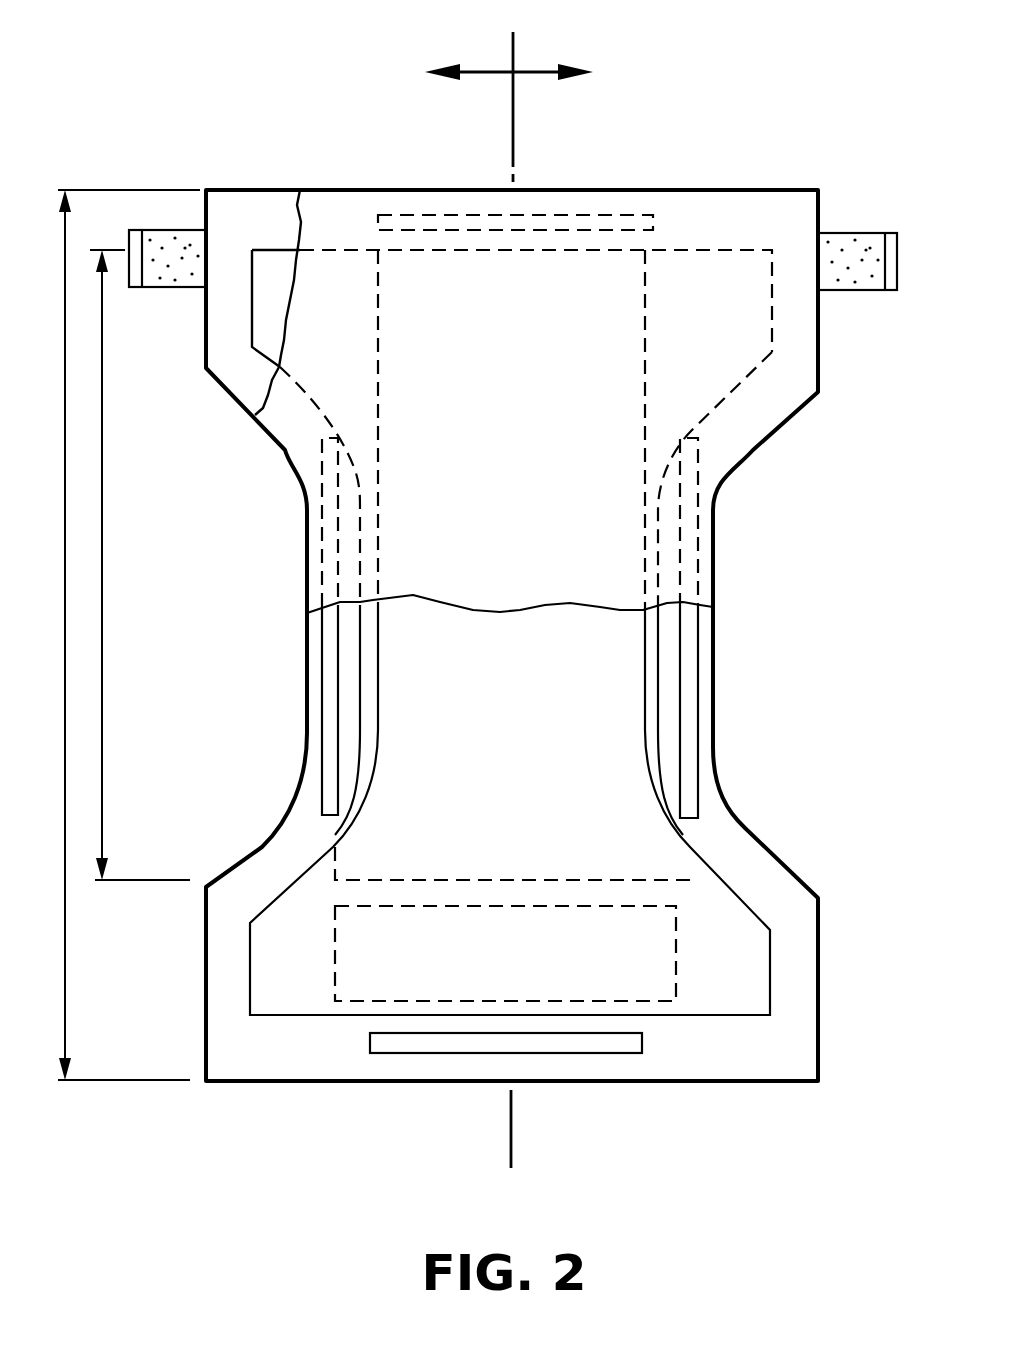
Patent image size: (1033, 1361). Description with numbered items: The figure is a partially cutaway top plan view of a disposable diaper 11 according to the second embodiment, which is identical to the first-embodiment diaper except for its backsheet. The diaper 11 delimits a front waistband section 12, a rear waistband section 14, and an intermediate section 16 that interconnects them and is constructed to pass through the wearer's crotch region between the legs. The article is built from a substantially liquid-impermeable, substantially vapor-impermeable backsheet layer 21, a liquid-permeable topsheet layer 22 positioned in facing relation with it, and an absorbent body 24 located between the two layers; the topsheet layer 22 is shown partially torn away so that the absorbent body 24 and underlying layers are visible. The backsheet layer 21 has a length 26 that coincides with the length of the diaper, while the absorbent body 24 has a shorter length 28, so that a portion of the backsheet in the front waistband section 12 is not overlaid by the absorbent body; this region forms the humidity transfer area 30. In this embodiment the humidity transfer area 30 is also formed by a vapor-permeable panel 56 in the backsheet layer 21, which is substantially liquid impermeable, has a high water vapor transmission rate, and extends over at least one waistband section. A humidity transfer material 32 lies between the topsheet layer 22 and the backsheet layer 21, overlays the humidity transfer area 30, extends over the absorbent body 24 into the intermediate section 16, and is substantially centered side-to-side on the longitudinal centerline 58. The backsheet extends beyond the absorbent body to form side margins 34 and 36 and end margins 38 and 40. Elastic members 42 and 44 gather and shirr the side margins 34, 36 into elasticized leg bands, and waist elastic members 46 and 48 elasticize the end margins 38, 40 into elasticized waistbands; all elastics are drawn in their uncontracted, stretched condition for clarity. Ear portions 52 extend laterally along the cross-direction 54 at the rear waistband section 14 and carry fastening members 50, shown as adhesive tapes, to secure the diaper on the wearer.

The diaper 11 is at (290, 96).
The front waistband section 12 is at (717, 1103).
The rear waistband section 14 is at (738, 176).
The intermediate section 16 is at (724, 718).
The backsheet layer 21 is at (307, 665).
The topsheet layer 22 is at (525, 622).
The absorbent body 24 is at (276, 262).
The length 26 is at (68, 978).
The length 28 is at (108, 484).
The humidity transfer area 30 is at (690, 908).
The humidity transfer material 32 is at (750, 930).
The side margin 34 is at (705, 685).
The side margin 36 is at (312, 542).
The end margin 38 is at (393, 1065).
The end margin 40 is at (340, 210).
The elastic member 42 is at (692, 640).
The elastic member 44 is at (327, 640).
The waist elastic member 46 is at (608, 215).
The waist elastic member 48 is at (571, 1050).
The fastening member 50 is at (178, 283).
The ear portion 52 is at (797, 215).
The cross-direction 54 is at (487, 76).
The vapor-permeable panel 56 is at (346, 970).
The longitudinal centerline 58 is at (520, 42).